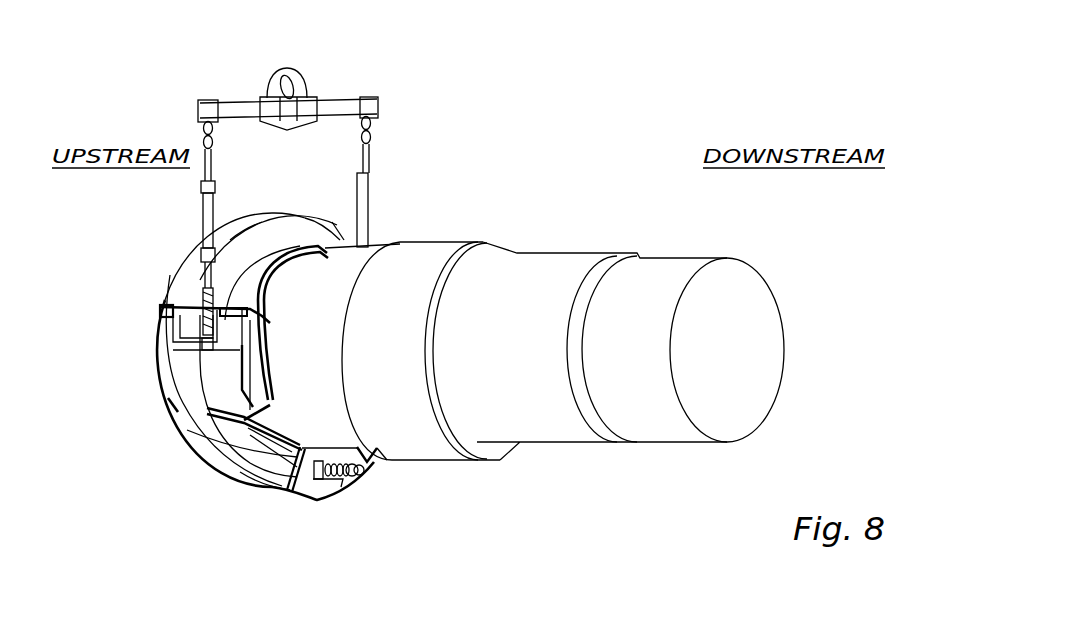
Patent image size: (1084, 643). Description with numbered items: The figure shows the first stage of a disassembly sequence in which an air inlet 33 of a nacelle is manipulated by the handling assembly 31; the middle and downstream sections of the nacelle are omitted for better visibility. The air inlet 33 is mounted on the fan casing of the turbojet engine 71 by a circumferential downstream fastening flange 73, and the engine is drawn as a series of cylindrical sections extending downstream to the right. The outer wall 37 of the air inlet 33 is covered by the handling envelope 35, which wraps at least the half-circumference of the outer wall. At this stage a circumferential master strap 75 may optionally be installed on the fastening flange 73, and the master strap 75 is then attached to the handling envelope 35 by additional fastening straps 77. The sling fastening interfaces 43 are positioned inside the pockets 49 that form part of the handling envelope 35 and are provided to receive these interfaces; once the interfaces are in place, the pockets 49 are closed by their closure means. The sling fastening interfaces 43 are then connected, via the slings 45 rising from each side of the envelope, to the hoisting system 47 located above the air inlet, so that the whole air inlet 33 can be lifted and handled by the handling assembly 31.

The handling assembly 31 is at (188, 376).
The air inlet 33 is at (268, 230).
The handling envelope 35 is at (197, 423).
The outer wall 37 is at (273, 260).
The sling fastening interfaces 43 is at (190, 327).
The slings 45 is at (203, 217).
The hoisting system 47 is at (300, 85).
The pockets 49 is at (190, 348).
The turbojet engine 71 is at (429, 279).
The fastening flange 73 is at (336, 232).
The master strap 75 is at (275, 445).
The fastening straps 77 is at (306, 480).